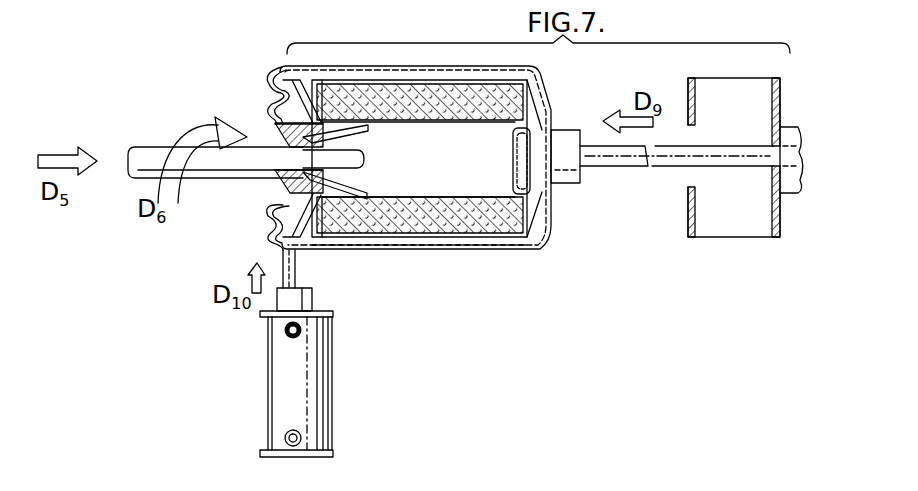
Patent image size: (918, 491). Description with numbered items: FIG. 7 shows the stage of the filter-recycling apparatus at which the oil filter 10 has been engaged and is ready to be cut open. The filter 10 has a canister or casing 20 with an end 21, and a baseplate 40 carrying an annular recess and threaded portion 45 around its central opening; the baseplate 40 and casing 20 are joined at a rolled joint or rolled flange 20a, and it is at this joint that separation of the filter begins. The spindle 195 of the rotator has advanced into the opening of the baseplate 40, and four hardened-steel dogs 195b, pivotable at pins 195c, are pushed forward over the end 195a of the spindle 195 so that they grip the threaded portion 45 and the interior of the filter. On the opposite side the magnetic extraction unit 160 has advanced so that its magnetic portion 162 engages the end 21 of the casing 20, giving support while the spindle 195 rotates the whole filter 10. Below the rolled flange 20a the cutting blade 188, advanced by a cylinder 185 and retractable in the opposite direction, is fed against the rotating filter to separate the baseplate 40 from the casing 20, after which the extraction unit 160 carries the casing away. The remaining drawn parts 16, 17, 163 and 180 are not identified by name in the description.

The oil filter 10 is at (342, 0).
The canister 16 is at (313, 251).
The canister bottom wall 17 is at (367, 250).
The canister 20 is at (287, 63).
The rolled joint 20a is at (318, 252).
The end of casing 21 is at (553, 117).
The baseplate 40 is at (274, 100).
The annular recess 45 is at (280, 188).
The magnetic extraction unit 160 is at (793, 147).
The magnetic portion 162 is at (565, 186).
The rod 163 is at (663, 170).
The bracket 180 is at (332, 437).
The cylinder 185 is at (318, 387).
The cutting blade 188 is at (288, 270).
The spindle 195 is at (262, 168).
The end of spindle 195a is at (365, 158).
The dogs 195b is at (367, 128).
The pins 195c is at (277, 118).